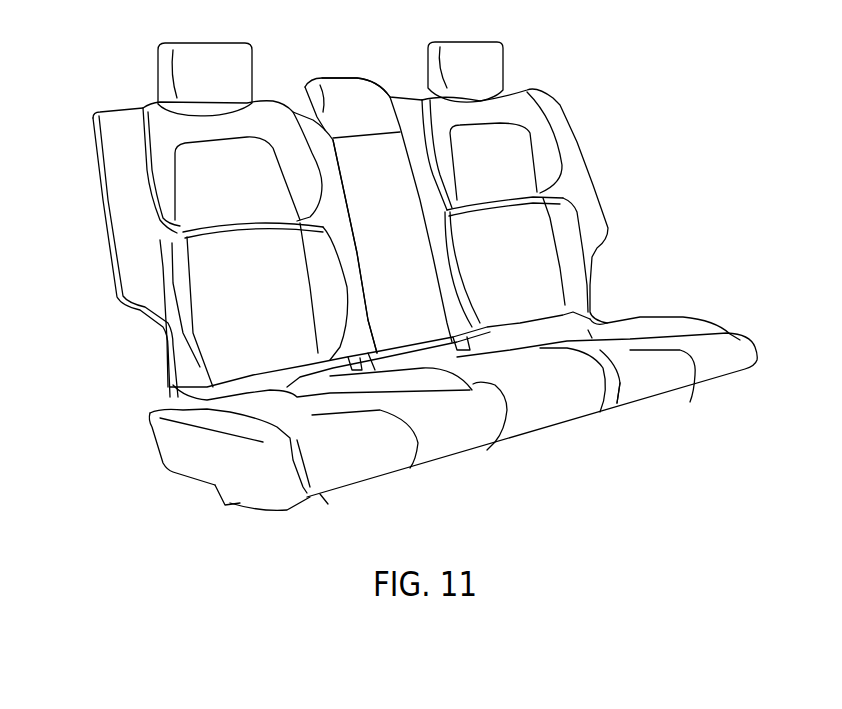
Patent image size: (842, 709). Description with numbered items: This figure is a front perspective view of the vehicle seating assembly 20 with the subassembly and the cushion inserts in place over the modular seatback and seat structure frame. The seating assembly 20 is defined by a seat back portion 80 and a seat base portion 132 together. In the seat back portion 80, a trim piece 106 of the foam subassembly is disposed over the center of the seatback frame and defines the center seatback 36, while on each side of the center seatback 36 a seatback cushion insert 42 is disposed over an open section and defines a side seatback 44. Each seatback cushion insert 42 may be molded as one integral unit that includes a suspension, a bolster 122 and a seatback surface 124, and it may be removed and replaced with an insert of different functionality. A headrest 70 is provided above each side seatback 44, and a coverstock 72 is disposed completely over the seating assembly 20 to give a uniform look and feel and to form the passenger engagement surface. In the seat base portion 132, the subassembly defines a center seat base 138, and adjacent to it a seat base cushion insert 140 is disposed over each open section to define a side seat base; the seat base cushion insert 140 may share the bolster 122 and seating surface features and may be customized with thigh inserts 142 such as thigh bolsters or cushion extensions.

The vehicle seating assembly 20 is at (611, 84).
The center seatback 36 is at (372, 180).
The seatback cushion insert 42 is at (269, 309).
The side seatback 44 is at (242, 190).
The headrest 70 is at (165, 70).
The coverstock 72 is at (372, 120).
The seat back portion 80 is at (127, 243).
The trim piece 106 is at (405, 108).
The bolster 122 is at (183, 297).
The seatback surface 124 is at (413, 258).
The seat base portion 132 is at (215, 388).
The center seat base 138 is at (523, 368).
The seat base cushion insert 140 is at (378, 442).
The thigh inserts 142 is at (453, 422).